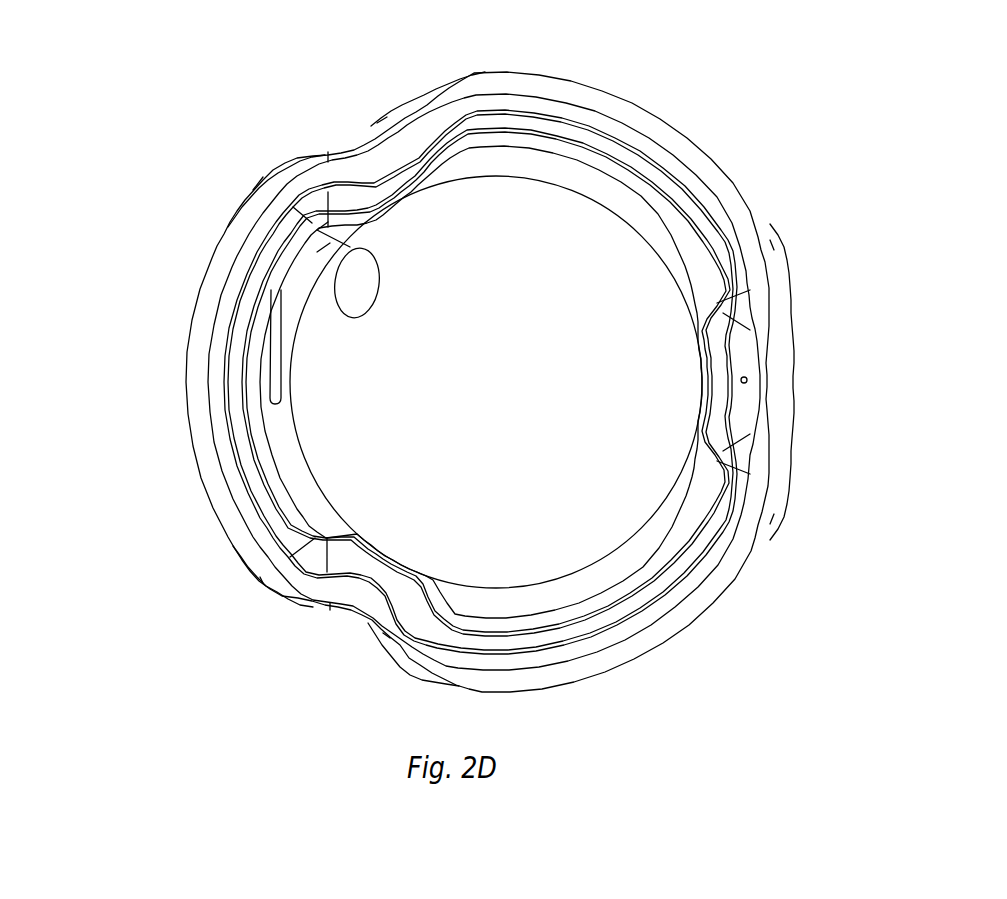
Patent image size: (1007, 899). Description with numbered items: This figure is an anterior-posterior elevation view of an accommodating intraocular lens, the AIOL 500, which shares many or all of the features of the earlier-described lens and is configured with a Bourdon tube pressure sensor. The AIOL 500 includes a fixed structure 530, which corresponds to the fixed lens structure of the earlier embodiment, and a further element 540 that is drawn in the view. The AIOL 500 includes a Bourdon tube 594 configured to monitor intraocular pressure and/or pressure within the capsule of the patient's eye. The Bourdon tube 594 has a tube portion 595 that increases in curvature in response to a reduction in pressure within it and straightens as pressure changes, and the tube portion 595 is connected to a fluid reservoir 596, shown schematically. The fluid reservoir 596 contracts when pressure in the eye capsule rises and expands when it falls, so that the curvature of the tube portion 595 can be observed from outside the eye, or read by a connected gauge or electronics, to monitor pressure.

The AIOL 500 is at (777, 126).
The fixed structure 530 is at (355, 466).
The outer frame 540 is at (227, 436).
The Bourdon tube 594 is at (366, 326).
The tube portion 595 is at (283, 313).
The fluid reservoir 596 is at (353, 273).